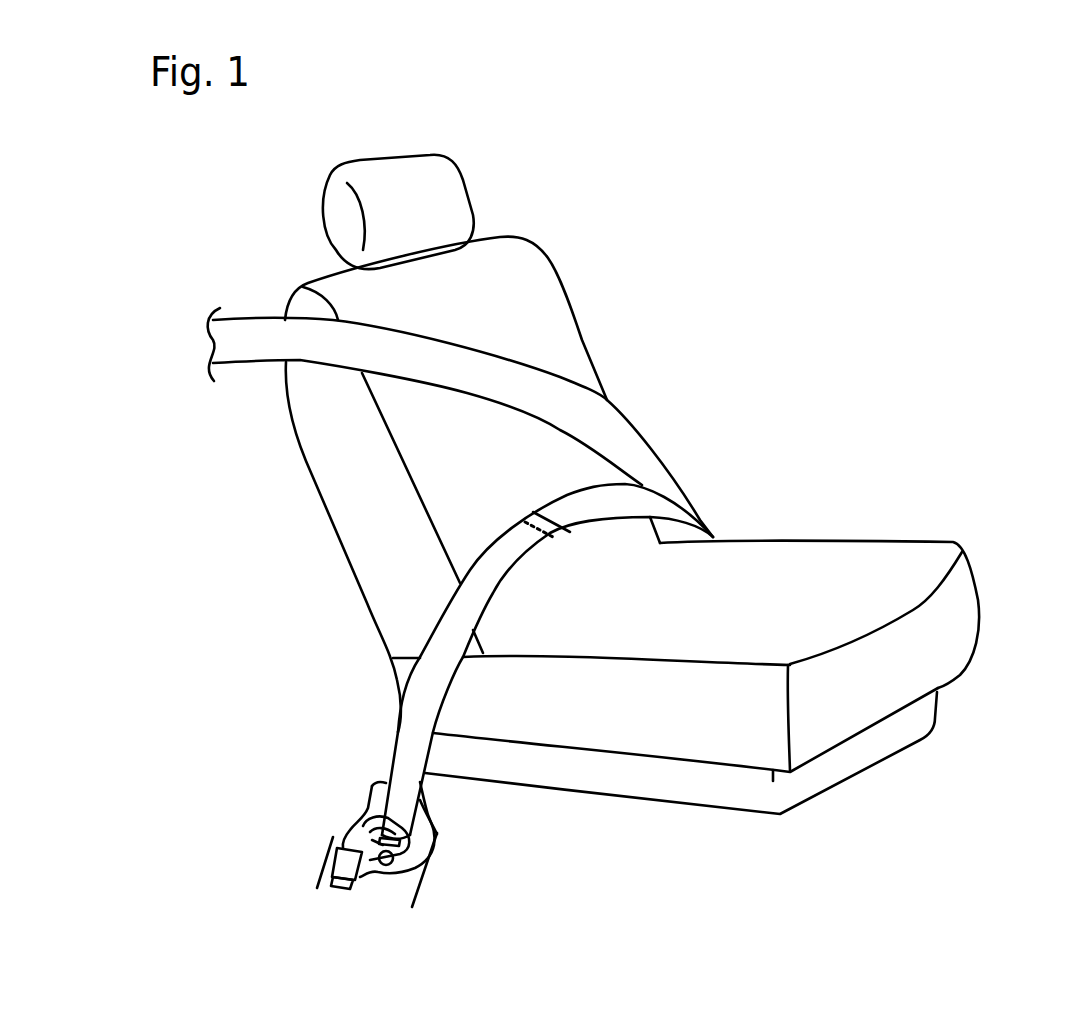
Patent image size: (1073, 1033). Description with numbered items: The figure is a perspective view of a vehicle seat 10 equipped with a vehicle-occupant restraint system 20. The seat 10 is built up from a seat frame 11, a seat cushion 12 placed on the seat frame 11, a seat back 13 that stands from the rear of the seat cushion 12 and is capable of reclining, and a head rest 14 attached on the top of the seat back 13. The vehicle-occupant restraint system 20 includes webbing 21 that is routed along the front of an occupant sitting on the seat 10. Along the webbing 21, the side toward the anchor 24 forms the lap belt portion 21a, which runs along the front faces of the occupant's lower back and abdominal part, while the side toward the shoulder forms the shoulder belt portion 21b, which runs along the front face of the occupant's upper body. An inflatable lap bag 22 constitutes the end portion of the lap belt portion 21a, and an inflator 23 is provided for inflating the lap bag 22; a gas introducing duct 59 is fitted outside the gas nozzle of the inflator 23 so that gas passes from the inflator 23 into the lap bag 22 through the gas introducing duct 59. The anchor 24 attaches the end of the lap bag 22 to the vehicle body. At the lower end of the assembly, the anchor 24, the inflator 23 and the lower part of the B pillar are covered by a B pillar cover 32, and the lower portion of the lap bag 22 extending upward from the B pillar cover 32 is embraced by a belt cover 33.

The seat 10 is at (565, 224).
The seat frame 11 is at (608, 768).
The seat cushion 12 is at (958, 610).
The seat back 13 is at (340, 483).
The head rest 14 is at (413, 173).
The vehicle-occupant restraint system 20 is at (380, 617).
The webbing 21 is at (640, 391).
The lap belt portion 21a is at (660, 503).
The shoulder belt portion 21b is at (640, 440).
The lap bag 22 is at (503, 565).
The inflator 23 is at (343, 840).
The anchor 24 is at (407, 857).
The B pillar cover 32 is at (433, 840).
The belt cover 33 is at (373, 793).
The gas introducing duct 59 is at (363, 817).